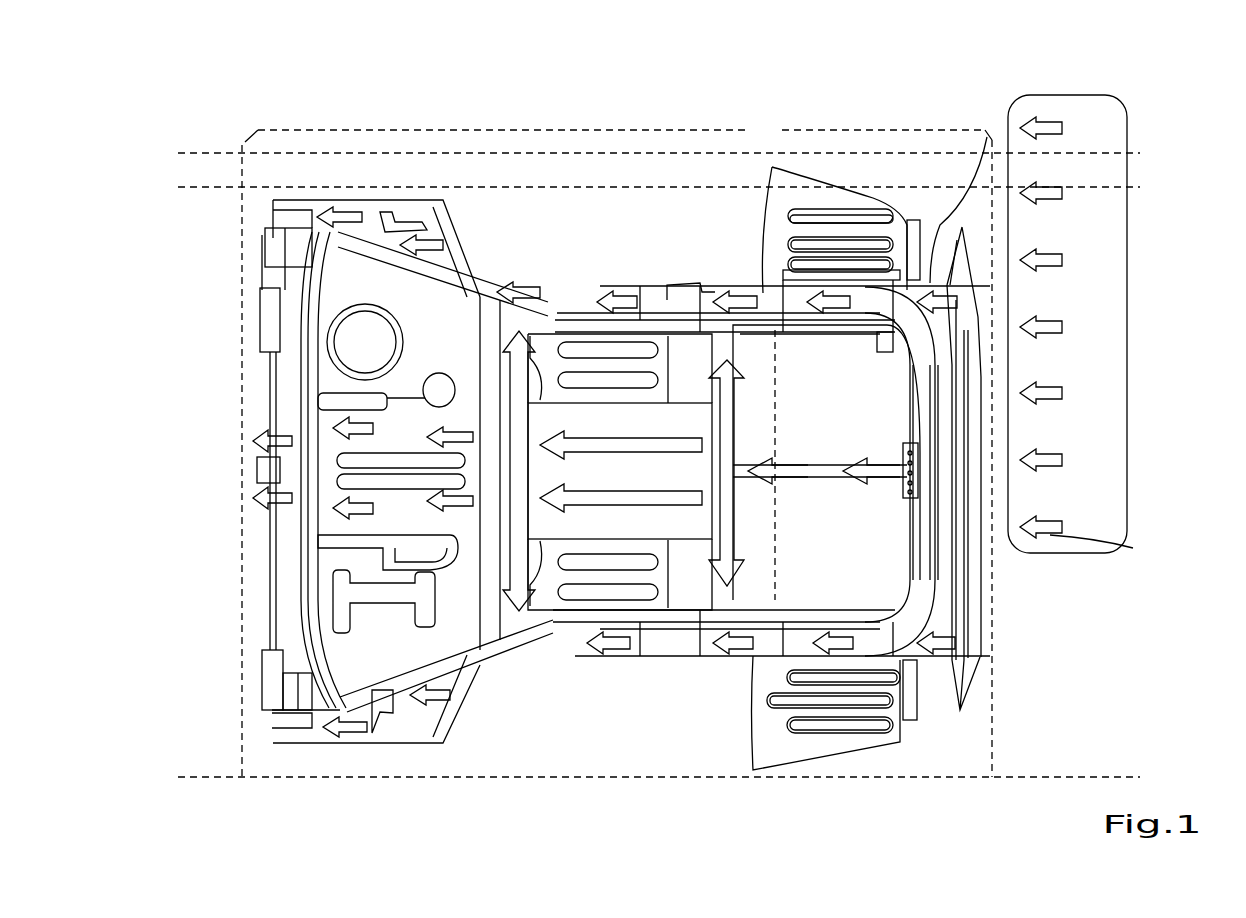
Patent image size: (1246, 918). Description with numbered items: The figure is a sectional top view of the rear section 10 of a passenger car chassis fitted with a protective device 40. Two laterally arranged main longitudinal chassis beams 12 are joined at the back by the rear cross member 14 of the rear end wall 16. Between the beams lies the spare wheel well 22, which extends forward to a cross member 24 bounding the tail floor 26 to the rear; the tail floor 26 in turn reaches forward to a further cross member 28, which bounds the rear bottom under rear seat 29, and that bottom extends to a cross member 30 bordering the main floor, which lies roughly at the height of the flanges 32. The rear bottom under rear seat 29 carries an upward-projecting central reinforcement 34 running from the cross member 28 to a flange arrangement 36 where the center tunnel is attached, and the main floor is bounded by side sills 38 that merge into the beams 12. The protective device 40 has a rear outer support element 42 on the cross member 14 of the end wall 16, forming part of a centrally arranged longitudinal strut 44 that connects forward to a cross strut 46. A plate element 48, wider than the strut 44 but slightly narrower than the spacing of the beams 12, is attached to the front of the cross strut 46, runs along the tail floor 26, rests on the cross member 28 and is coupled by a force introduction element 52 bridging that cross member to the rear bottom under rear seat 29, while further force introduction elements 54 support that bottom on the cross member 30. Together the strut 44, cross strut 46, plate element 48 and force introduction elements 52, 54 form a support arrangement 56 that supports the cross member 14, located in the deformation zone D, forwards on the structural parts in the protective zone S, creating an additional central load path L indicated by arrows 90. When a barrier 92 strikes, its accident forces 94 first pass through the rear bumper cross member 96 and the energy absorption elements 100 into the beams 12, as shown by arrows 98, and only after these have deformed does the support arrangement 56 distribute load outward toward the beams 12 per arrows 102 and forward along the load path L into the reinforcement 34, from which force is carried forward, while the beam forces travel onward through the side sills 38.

The rear section 10 is at (605, 425).
The main longitudinal chassis beams 12 is at (853, 268).
The rear cross member 14 is at (987, 373).
The rear end wall 16 is at (1010, 327).
The spare wheel well 22 is at (853, 403).
The cross member 24 is at (687, 630).
The tail floor 26 is at (687, 640).
The cross member 28 is at (477, 663).
The rear bottom under rear seat 29 is at (372, 620).
The cross member 30 is at (263, 657).
The flanges 32 is at (257, 687).
The reinforcement 34 is at (330, 497).
The flange arrangement 36 is at (225, 484).
The side sills 38 is at (400, 213).
The protective device 40 is at (637, 303).
The outer support element 42 is at (937, 462).
The strut 44 is at (830, 463).
The cross strut 46 is at (700, 284).
The plate element 48 is at (600, 440).
The force introduction element 52 is at (472, 427).
The force introduction elements 54 is at (263, 385).
The support arrangement 56 is at (758, 536).
The arrows 90 is at (263, 447).
The barrier 92 is at (1103, 505).
The accident forces 94 is at (1106, 559).
The bumper cross member 96 is at (985, 605).
The arrows 98 is at (515, 295).
The energy absorption elements 100 is at (967, 687).
The arrows 102 is at (980, 563).
The load path L is at (758, 506).
The protective zone S is at (748, 128).
The deformation zone D is at (780, 145).